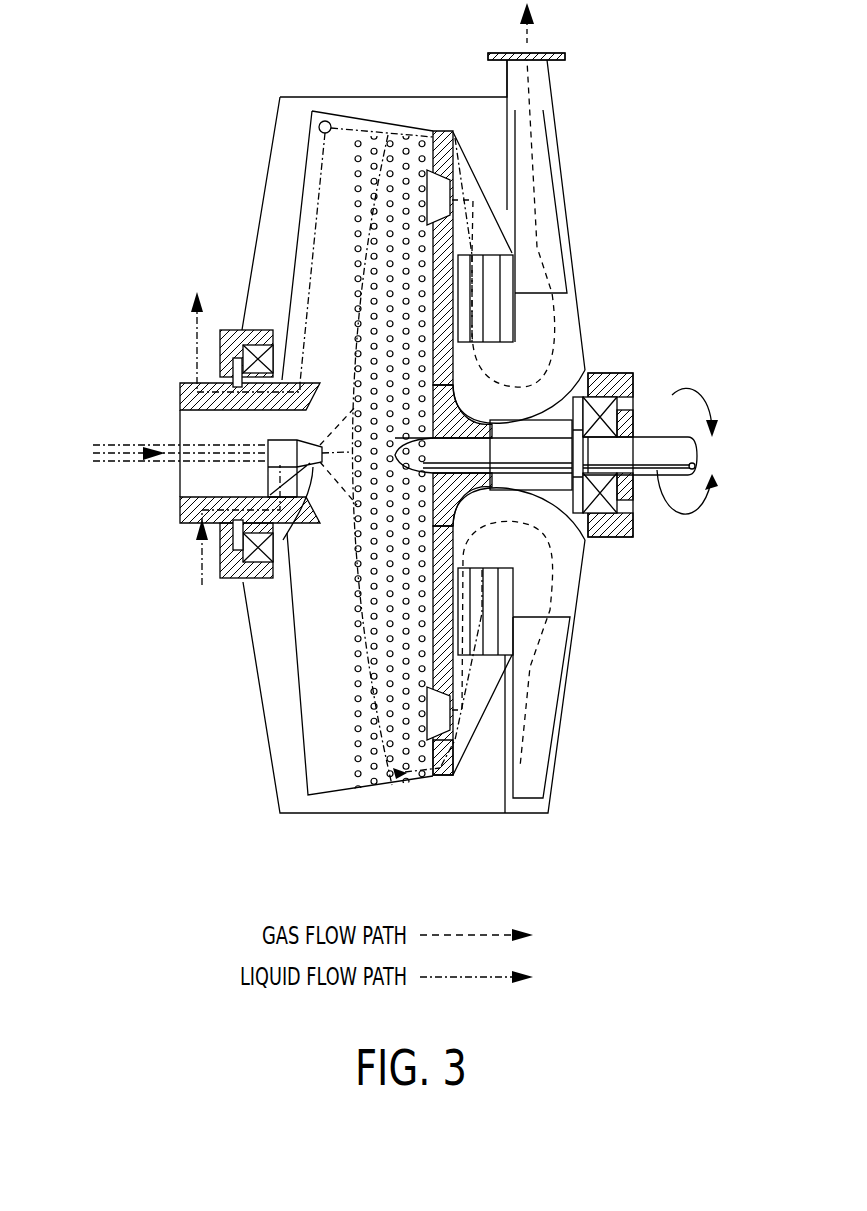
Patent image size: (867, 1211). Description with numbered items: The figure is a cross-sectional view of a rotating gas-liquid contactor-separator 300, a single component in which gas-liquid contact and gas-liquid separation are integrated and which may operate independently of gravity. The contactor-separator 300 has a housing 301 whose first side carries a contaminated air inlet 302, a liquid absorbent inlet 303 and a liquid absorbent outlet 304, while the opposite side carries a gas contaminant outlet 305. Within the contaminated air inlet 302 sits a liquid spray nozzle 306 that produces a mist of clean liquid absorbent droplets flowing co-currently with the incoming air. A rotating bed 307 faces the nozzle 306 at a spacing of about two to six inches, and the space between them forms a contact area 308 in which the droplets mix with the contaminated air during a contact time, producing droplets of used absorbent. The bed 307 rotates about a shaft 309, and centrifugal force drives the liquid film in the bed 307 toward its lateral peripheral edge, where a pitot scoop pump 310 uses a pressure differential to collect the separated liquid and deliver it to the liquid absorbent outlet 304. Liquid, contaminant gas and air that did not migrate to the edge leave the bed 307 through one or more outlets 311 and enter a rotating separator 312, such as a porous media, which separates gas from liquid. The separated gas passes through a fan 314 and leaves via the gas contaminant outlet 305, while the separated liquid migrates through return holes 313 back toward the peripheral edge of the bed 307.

The contactor-separator 300 is at (146, 155).
The housing 301 is at (297, 814).
The contaminated air inlet 302 is at (193, 431).
The liquid absorbent inlet 303 is at (195, 568).
The liquid absorbent outlet 304 is at (195, 330).
The gas contaminant outlet 305 is at (550, 78).
The liquid spray nozzle 306 is at (243, 585).
The rotating bed 307 is at (362, 218).
The contact area 308 is at (335, 582).
The shaft 309 is at (638, 450).
The pitot scoop pump 310 is at (327, 120).
The outlets 311 is at (430, 218).
The rotating separator 312 is at (480, 581).
The return holes 313 is at (443, 776).
The fan 314 is at (538, 787).